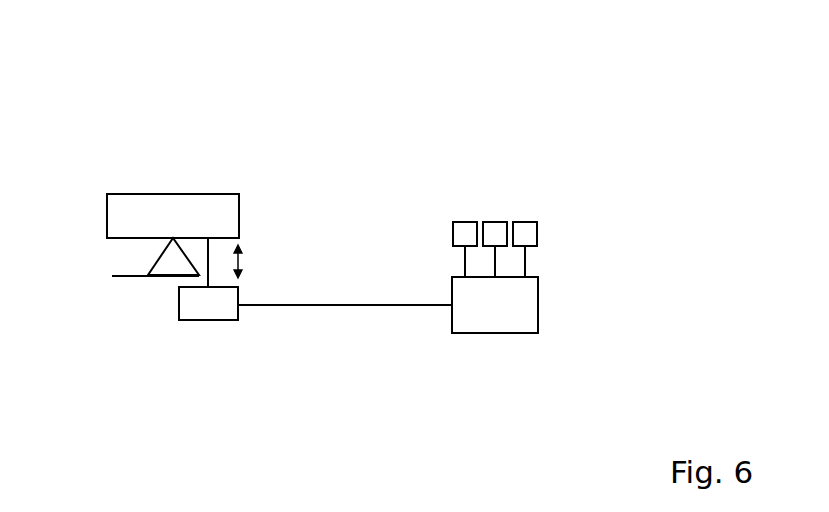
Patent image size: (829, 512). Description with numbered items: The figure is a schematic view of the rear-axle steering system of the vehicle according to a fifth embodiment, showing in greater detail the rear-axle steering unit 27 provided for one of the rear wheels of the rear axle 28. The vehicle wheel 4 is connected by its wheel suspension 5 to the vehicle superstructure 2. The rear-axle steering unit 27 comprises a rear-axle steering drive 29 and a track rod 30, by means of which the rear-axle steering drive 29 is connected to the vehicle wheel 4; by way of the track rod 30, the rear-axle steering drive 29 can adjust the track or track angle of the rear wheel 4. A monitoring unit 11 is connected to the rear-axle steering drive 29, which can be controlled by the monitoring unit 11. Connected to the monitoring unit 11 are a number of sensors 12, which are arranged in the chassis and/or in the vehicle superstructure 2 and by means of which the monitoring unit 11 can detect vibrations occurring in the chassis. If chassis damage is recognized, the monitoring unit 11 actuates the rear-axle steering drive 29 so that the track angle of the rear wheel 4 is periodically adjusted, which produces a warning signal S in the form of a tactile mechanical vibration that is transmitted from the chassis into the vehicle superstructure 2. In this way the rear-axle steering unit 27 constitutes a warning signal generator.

The vehicle superstructure 2 is at (128, 279).
The vehicle wheel 4 is at (181, 197).
The wheel suspension 5 is at (152, 261).
The monitoring unit 11 is at (535, 308).
The sensors 12 is at (465, 228).
The rear-axle steering unit 27 is at (120, 345).
The rear axle 28 is at (196, 134).
The rear-axle steering drive 29 is at (205, 319).
The track rod 30 is at (210, 257).
The warning signal S is at (239, 263).